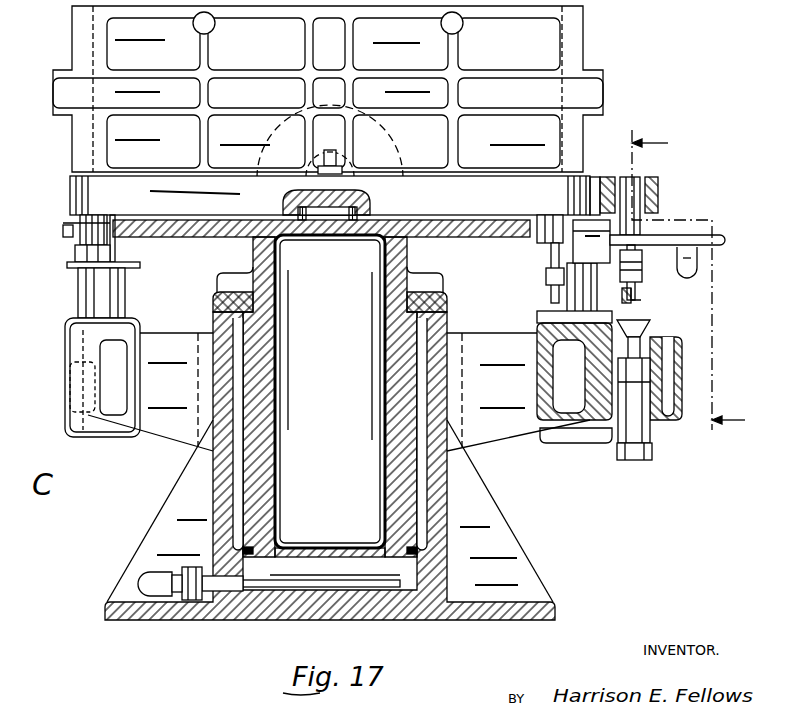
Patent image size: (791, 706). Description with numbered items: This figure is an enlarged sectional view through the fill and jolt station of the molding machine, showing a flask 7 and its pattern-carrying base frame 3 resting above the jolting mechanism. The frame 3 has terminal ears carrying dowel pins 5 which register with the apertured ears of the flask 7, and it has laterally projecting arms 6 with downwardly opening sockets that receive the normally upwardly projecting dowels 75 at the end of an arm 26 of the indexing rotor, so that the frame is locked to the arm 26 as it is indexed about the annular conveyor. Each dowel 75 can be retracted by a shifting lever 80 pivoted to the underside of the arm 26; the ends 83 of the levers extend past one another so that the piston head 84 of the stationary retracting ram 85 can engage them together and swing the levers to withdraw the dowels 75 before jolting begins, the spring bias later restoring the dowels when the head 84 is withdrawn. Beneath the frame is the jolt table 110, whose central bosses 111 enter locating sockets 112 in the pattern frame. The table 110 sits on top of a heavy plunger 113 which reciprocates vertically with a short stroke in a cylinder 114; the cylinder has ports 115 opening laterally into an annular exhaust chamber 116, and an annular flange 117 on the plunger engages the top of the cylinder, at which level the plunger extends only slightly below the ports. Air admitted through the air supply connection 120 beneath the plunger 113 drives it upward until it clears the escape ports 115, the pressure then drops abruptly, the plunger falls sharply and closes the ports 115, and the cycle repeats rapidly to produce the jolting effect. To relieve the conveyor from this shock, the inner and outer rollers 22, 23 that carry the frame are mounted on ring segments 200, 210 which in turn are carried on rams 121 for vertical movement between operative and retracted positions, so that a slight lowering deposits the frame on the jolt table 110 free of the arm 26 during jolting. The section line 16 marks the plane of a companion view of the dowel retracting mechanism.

The flask 7 is at (578, 48).
The dowel pin 5 is at (345, 153).
The central boss 111 is at (296, 210).
The locating socket 112 is at (357, 208).
The base frame 3 is at (604, 178).
The laterally projecting arm 6 is at (658, 182).
The dowel 75 is at (658, 203).
The section line 16- 16 is at (700, 281).
The arm 26 is at (722, 237).
The outer roller 23 is at (79, 223).
The inner roller 22 is at (560, 216).
The ring segment 200 is at (578, 248).
The ring segment 210 is at (120, 237).
The ram 121 is at (119, 294).
The annular flange 117 is at (117, 242).
The jolt table 110 is at (438, 282).
The shifting lever 80 is at (643, 278).
The lever end 83 is at (642, 300).
The piston head 84 is at (650, 323).
The retracting ram 85 is at (650, 438).
The plunger 113 is at (215, 441).
The cylinder 114 is at (247, 453).
The annular exhaust chamber 116 is at (237, 503).
The port 115 is at (247, 548).
The air supply connection 120 is at (236, 592).